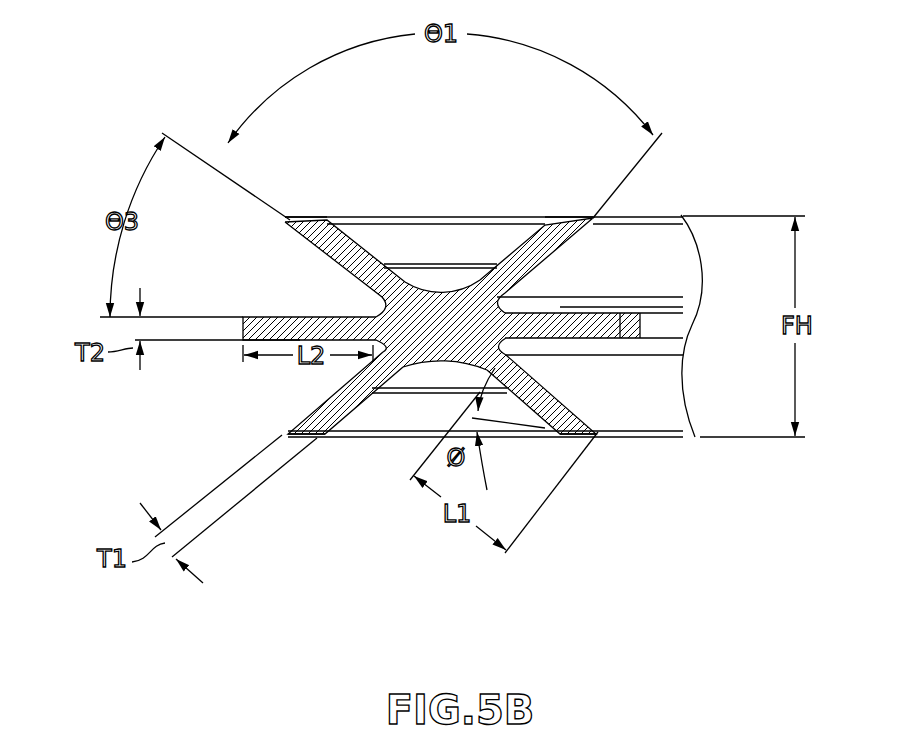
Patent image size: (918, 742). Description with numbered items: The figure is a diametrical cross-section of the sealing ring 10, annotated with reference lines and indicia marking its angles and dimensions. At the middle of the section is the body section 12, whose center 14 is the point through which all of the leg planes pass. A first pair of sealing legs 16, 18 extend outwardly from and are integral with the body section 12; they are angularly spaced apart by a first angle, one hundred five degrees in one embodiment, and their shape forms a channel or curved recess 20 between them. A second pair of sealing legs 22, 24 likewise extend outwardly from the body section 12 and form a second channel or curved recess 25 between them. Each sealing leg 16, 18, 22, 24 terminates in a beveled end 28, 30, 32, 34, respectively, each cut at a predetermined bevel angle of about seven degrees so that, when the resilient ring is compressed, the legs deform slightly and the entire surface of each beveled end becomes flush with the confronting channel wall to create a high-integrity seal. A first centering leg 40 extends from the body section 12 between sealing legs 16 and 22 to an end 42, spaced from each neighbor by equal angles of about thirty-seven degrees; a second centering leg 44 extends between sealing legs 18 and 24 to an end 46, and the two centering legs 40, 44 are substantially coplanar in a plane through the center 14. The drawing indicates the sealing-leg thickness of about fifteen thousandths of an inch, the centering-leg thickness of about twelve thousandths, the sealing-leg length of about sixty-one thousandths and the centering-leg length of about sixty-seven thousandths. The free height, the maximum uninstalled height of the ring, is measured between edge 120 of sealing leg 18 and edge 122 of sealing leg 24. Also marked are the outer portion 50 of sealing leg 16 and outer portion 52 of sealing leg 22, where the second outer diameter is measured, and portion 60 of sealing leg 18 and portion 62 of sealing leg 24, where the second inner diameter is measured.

The sealing ring 10 is at (455, 222).
The body section 12 is at (462, 345).
The center of body section 14 is at (388, 400).
The first sealing leg 16 is at (345, 266).
The second sealing leg 18 is at (558, 254).
The curved recess 20 is at (408, 250).
The third sealing leg 22 is at (303, 410).
The fourth sealing leg 24 is at (622, 440).
The curved recess 25 is at (405, 415).
The beveled end 28 is at (305, 215).
The beveled end 30 is at (572, 212).
The beveled end 32 is at (318, 440).
The beveled end 34 is at (560, 440).
The first centering leg 40 is at (243, 317).
The end of first centering leg 42 is at (243, 340).
The second centering leg 44 is at (645, 338).
The end of second centering leg 46 is at (640, 325).
The outer portion of sealing leg 16 50 is at (285, 221).
The outer portion of sealing leg 22 52 is at (287, 436).
The portion of sealing leg 18 60 is at (620, 212).
The portion of sealing leg 24 62 is at (596, 440).
The edge of sealing leg 18 120 is at (683, 215).
The edge of sealing leg 24 122 is at (690, 437).